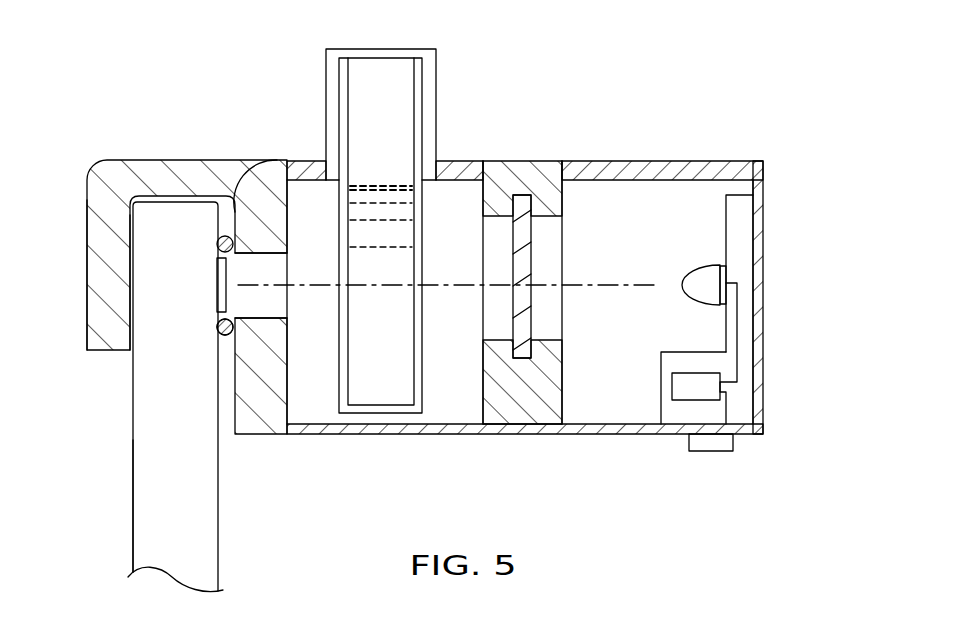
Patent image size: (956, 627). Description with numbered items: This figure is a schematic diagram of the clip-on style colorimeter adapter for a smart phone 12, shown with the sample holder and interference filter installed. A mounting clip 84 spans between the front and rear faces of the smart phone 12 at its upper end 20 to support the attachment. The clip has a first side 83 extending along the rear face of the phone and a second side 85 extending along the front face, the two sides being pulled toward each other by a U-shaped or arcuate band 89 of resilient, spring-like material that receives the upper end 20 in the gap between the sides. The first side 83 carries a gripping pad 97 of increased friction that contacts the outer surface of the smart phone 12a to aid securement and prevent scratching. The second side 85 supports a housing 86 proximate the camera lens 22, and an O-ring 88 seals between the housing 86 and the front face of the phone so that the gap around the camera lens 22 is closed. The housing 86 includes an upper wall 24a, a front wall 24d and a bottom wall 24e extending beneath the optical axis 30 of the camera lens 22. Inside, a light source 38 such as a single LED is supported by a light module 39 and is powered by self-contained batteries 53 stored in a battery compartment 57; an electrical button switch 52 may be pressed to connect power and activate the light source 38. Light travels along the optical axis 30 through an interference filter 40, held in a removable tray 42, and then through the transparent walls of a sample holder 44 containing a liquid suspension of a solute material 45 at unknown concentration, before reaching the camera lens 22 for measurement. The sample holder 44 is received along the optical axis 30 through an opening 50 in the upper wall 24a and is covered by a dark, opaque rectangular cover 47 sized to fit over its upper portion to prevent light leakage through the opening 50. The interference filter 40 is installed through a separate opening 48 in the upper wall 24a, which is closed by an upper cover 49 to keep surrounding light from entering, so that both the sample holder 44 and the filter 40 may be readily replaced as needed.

The smart phone 12 is at (167, 535).
The outer surface of the smart phone 12a is at (133, 482).
The upper end of the smart phone 20 is at (182, 268).
The camera lens 22 is at (223, 280).
The upper wall 24a is at (640, 167).
The front wall 24d is at (758, 318).
The bottom wall 24e is at (515, 432).
The optical axis 30 is at (580, 288).
The light source 38 is at (703, 270).
The light module 39 is at (738, 242).
The interference filter 40 is at (522, 247).
The removable tray 42 is at (508, 402).
The sample holder 44 is at (428, 377).
The solute material 45 is at (383, 388).
The rectangular cover 47 is at (430, 92).
The opening 48 is at (472, 162).
The upper cover 49 is at (510, 170).
The opening 50 is at (326, 162).
The electrical button switch 52 is at (710, 443).
The batteries 53 is at (700, 378).
The battery compartment 57 is at (672, 412).
The first side 83 is at (100, 217).
The mounting clip 84 is at (182, 155).
The second side 85 is at (258, 233).
The housing 86 is at (753, 117).
The O-ring 88 is at (225, 337).
The band 89 is at (137, 183).
The gripping pad 97 is at (130, 310).